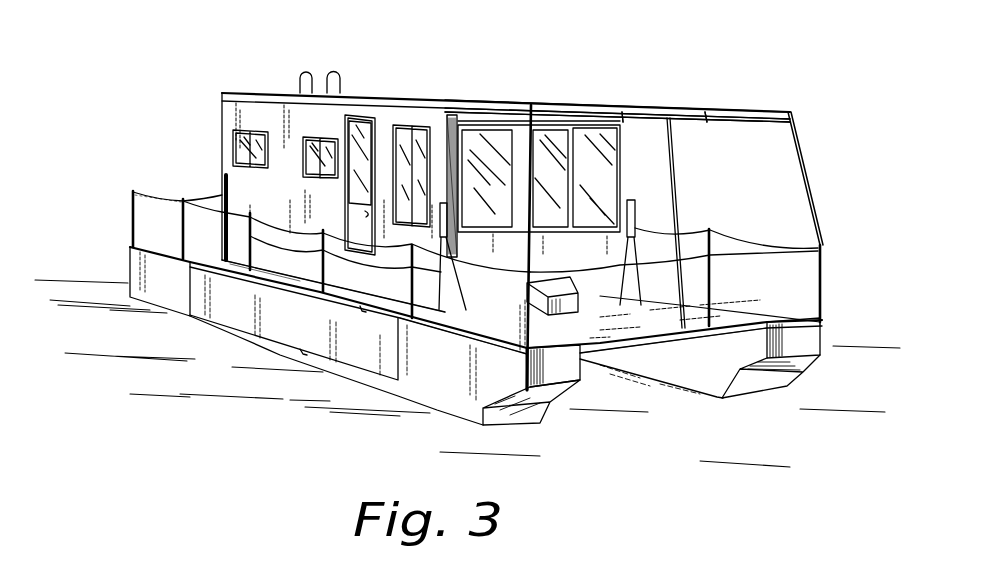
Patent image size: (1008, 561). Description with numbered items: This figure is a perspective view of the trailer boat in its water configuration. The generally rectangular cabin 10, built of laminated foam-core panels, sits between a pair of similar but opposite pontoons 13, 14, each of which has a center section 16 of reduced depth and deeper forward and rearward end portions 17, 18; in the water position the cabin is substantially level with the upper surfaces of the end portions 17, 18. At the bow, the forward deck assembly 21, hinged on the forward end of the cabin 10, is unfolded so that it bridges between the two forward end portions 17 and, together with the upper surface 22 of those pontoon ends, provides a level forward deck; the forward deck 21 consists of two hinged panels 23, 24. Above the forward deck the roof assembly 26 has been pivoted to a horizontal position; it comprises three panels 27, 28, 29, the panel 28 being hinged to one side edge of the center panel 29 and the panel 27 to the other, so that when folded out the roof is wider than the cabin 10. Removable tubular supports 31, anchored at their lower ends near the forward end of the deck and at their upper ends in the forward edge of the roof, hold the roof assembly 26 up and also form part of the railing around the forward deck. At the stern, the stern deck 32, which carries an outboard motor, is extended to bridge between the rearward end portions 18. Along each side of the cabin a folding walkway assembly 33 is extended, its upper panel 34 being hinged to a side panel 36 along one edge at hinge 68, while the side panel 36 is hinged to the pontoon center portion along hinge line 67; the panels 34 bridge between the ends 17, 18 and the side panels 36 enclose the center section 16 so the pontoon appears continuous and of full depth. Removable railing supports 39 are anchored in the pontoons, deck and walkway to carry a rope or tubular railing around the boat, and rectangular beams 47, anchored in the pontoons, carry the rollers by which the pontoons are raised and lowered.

The cabin 10 is at (427, 92).
The pontoon 13 is at (403, 392).
The pontoon 14 is at (700, 388).
The center section 16 is at (253, 340).
The forward end portion 17 is at (477, 407).
The rearward end portion 18 is at (137, 283).
The forward deck assembly 21 is at (643, 345).
The upper surface 22 is at (485, 327).
The panel 23 is at (713, 323).
The panel 24 is at (650, 304).
The roof assembly 26 is at (760, 105).
The panel 27 is at (524, 110).
The panel 28 is at (722, 110).
The panel 29 is at (623, 112).
The tubular support 31 is at (803, 163).
The stern deck 32 is at (205, 245).
The folding walkway assembly 33 is at (243, 296).
The upper panel 34 is at (281, 259).
The side panel 36 is at (320, 333).
The railing support 39 is at (130, 192).
The rectangular beam 47 is at (222, 192).
The hinge line 67 is at (303, 355).
The hinge 68 is at (363, 307).